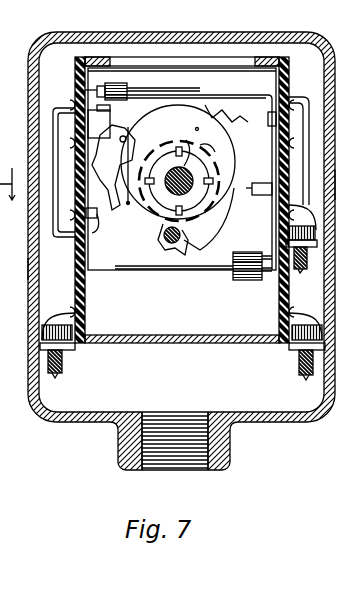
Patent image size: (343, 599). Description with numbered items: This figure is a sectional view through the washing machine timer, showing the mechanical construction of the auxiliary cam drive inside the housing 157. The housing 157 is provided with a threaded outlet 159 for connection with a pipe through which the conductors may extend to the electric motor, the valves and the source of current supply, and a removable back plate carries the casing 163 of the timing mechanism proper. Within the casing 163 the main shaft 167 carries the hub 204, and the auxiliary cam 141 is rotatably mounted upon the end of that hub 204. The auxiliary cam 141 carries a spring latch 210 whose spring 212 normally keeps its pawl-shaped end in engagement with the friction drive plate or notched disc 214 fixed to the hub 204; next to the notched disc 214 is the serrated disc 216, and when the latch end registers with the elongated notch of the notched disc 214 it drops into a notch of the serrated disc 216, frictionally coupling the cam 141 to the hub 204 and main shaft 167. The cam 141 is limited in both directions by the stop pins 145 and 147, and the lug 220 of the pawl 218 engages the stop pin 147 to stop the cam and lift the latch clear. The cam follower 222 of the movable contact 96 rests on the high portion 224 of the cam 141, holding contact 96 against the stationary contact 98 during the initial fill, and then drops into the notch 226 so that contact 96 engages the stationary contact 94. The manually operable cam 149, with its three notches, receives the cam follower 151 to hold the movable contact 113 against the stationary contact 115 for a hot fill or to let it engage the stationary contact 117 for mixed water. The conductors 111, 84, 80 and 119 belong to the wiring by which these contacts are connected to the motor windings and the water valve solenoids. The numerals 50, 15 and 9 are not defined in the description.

The housing 50 is at (78, 423).
The threaded outlet 159 is at (236, 452).
The housing 157 is at (12, 270).
The housing side wall 15 is at (333, 202).
The section indicator 9 is at (12, 184).
The casing 163 is at (208, 345).
The conductor 111 is at (57, 179).
The conductor 84 is at (306, 97).
The conductor 80 is at (57, 355).
The conductor 119 is at (300, 380).
The stationary contact 117 is at (252, 258).
The stationary contact 98 is at (109, 86).
The movable contact 96 is at (146, 90).
The stationary contact 94 is at (99, 121).
The auxiliary cam 141 is at (268, 120).
The cam follower 222 is at (176, 104).
The high portion 224 is at (208, 106).
The notch 226 is at (226, 121).
The main shaft 167 is at (188, 143).
The serrated disc 216 is at (220, 164).
The pawl 218 is at (218, 184).
The notched disc 214 is at (204, 149).
The hub 204 is at (210, 219).
The stop pin 145 is at (262, 198).
The lug 220 is at (100, 157).
The spring 212 is at (129, 130).
The spring latch 210 is at (97, 217).
The stop pin 147 is at (108, 233).
The manually operable cam 149 is at (164, 236).
The cam follower 151 is at (165, 255).
The movable contact 113 is at (218, 273).
The stationary contact 115 is at (262, 290).